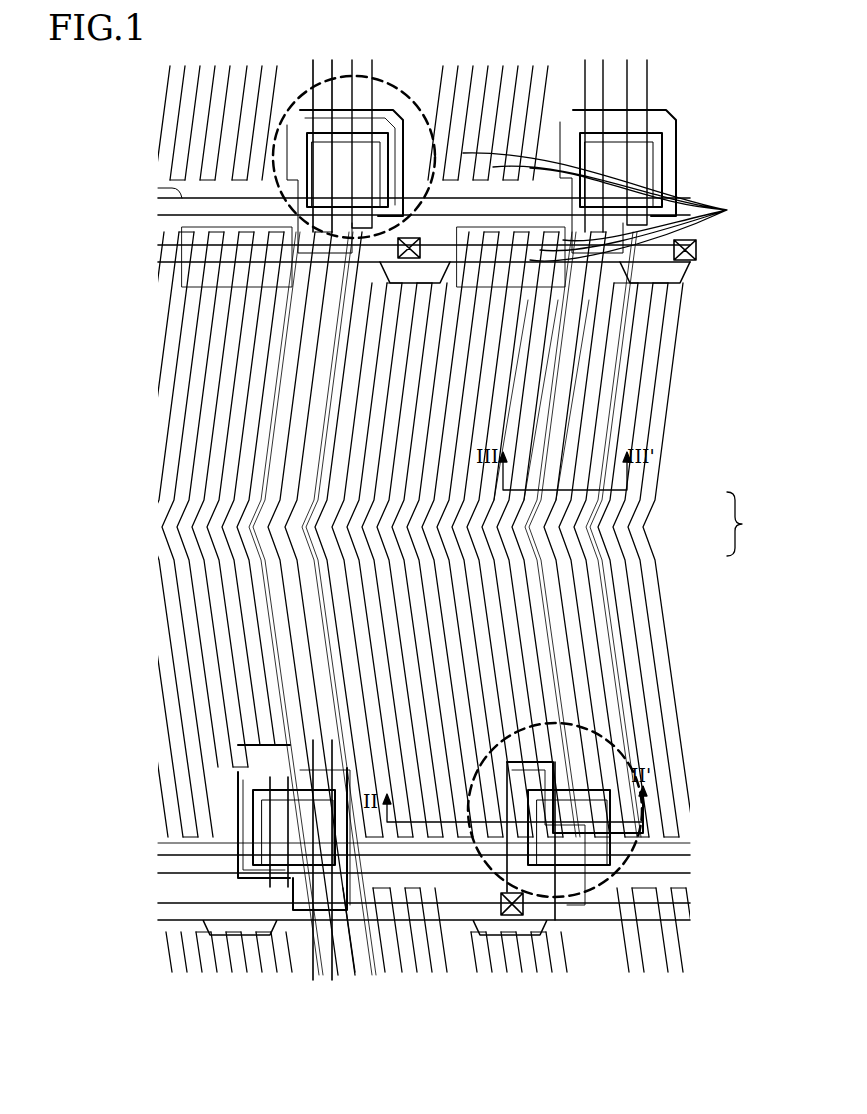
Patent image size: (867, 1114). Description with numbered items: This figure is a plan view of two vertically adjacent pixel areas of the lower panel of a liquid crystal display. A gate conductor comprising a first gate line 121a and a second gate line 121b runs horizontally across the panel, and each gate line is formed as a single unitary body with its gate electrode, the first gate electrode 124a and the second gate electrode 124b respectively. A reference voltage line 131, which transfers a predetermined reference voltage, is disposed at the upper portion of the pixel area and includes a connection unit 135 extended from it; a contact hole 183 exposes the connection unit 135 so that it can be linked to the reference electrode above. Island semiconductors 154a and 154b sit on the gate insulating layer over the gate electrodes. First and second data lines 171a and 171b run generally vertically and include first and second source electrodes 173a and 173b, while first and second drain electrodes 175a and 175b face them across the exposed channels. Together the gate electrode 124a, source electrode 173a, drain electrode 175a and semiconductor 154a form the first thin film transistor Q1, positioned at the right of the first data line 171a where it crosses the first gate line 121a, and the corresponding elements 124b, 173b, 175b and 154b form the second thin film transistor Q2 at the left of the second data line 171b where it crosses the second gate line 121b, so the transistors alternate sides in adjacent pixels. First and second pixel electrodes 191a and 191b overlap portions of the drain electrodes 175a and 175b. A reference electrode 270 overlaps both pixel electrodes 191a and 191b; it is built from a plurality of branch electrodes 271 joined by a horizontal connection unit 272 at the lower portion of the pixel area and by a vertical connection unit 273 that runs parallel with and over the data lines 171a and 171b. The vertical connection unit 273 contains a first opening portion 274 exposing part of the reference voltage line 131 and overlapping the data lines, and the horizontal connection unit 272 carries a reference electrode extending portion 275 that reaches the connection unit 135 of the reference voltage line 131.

The first gate line 121a is at (170, 187).
The second gate line 121b is at (400, 878).
The first gate electrode 124a is at (345, 133).
The second gate electrode 124b is at (612, 815).
The reference voltage line 131 is at (450, 190).
The connection unit 135 is at (300, 283).
The island semiconductor 154a is at (405, 150).
The island semiconductor 154b is at (538, 938).
The first data line 171a is at (305, 410).
The second data line 171b is at (580, 668).
The first source electrode 173a is at (320, 125).
The second source electrode 173b is at (585, 857).
The first drain electrode 175a is at (366, 125).
The second drain electrode 175b is at (555, 745).
The contact hole 183 is at (345, 300).
The first pixel electrode 191a is at (606, 100).
The second pixel electrode 191b is at (575, 385).
The reference electrode 270 is at (733, 526).
The first branch electrode 271 is at (540, 435).
The horizontal connection unit 272 is at (614, 207).
The vertical connection unit 273 is at (560, 355).
The first opening portion 274 is at (618, 900).
The reference electrode extending portion 275 is at (595, 330).
The first thin film transistor Q1 is at (300, 160).
The second thin film transistor Q2 is at (465, 890).